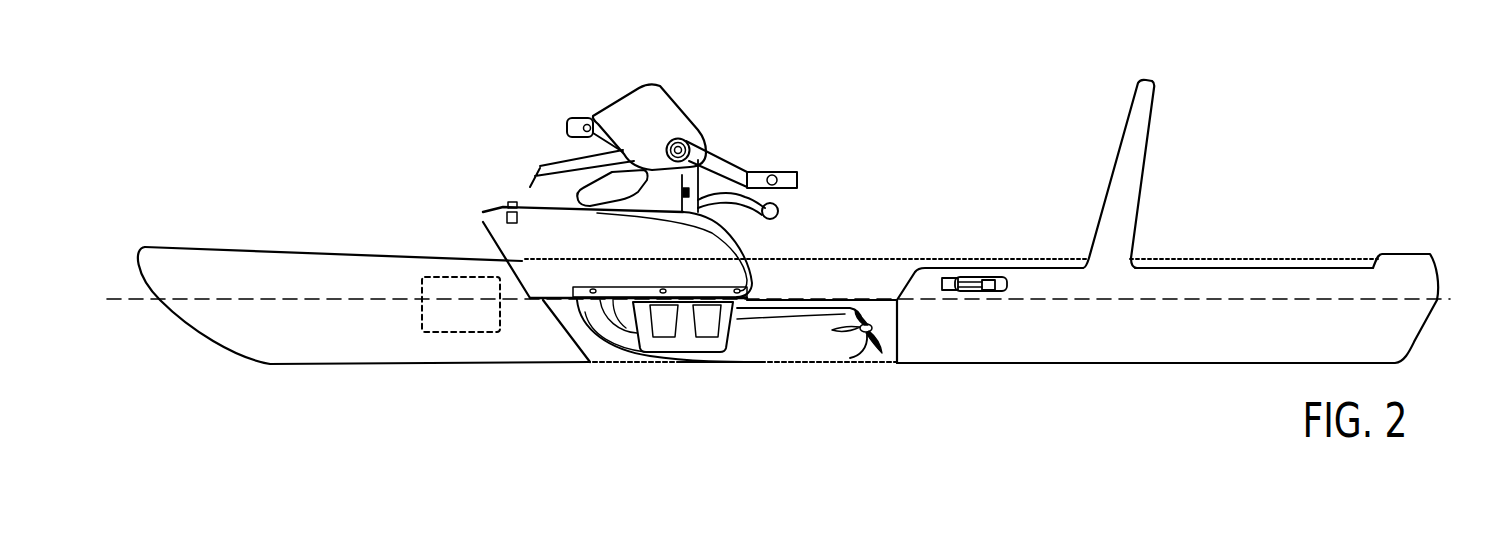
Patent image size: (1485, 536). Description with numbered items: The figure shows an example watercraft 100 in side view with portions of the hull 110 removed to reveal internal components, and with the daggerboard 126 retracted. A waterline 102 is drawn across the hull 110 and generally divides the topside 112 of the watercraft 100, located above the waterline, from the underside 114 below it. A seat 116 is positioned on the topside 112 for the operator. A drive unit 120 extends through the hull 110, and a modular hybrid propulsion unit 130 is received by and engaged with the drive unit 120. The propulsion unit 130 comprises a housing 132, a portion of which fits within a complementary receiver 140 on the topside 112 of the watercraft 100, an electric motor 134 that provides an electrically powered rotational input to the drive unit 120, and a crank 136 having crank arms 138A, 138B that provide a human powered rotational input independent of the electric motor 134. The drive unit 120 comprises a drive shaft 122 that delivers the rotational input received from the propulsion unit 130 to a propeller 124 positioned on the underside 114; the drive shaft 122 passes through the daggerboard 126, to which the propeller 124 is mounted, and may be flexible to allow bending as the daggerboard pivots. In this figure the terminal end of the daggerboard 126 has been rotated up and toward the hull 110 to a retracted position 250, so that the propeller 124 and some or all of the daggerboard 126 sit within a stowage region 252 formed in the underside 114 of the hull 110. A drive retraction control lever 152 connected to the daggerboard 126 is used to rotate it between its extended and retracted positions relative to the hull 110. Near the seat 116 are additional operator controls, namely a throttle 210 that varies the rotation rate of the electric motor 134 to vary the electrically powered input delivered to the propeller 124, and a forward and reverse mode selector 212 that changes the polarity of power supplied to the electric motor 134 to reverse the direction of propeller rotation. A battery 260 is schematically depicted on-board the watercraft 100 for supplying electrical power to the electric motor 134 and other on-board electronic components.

The watercraft 100 is at (1277, 127).
The waterline 102 is at (120, 297).
The hull 110 is at (313, 270).
The topside 112 is at (262, 225).
The underside 114 is at (260, 370).
The seat 116 is at (1125, 213).
The drive unit 120 is at (500, 220).
The drive shaft 122 is at (620, 312).
The propeller 124 is at (880, 350).
The daggerboard 126 is at (838, 350).
The modular hybrid propulsion unit 130 is at (540, 124).
The housing 132 is at (634, 113).
The electric motor 134 is at (649, 110).
The crank 136 is at (690, 136).
The crank arm 138A is at (585, 122).
The crank arm 138B is at (740, 167).
The complementary receiver 140 is at (548, 205).
The drive retraction control lever 152 is at (782, 203).
The throttle 210 is at (952, 282).
The forward and reverse mode selector 212 is at (997, 278).
The retracted position 250 is at (728, 385).
The stowage region 252 is at (617, 350).
The battery 260 is at (475, 316).